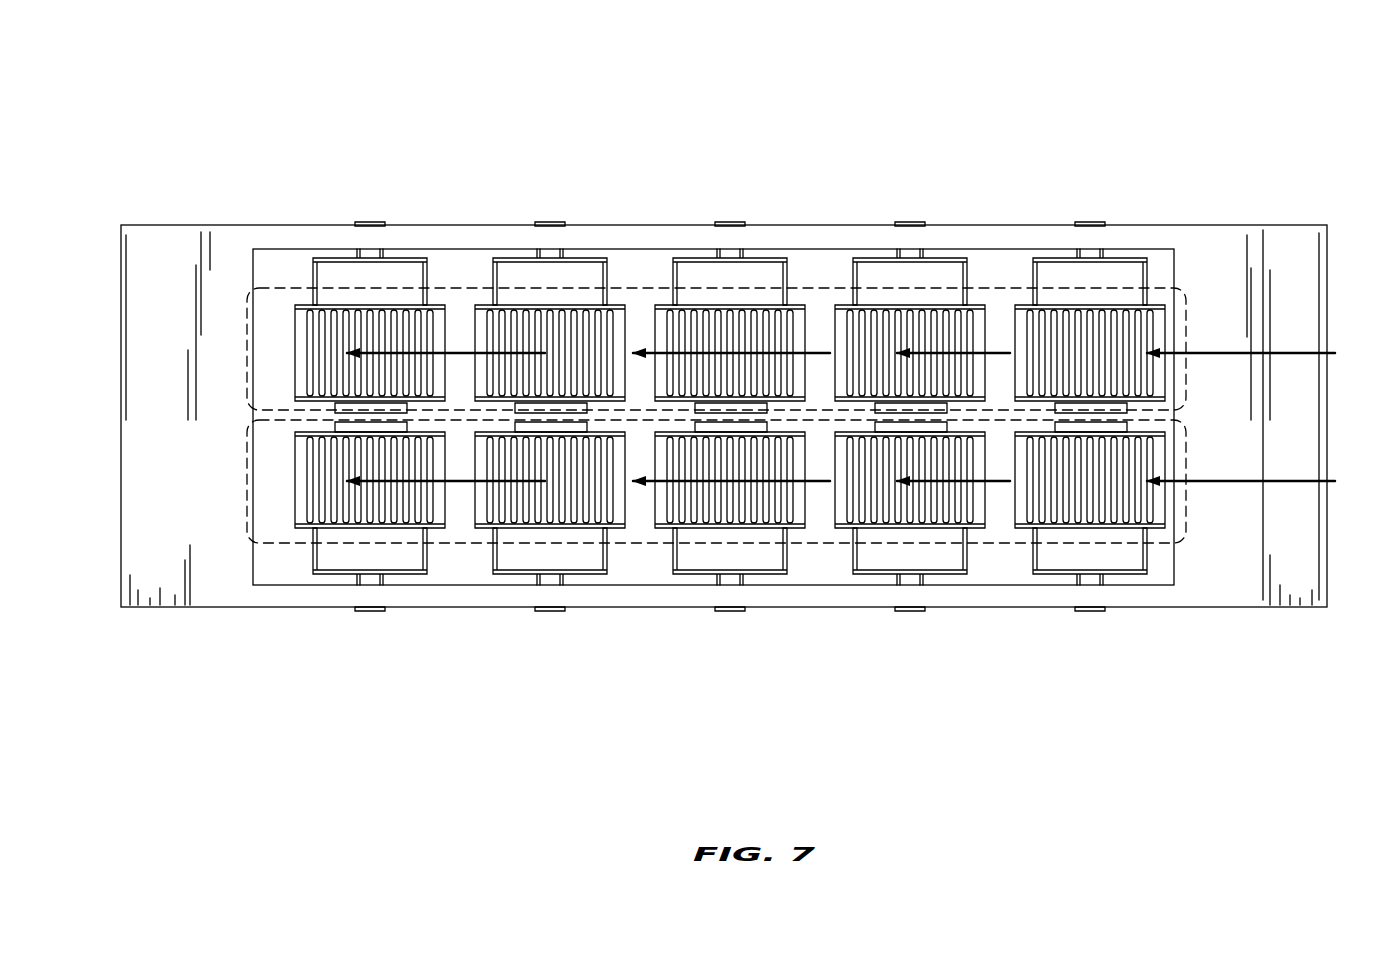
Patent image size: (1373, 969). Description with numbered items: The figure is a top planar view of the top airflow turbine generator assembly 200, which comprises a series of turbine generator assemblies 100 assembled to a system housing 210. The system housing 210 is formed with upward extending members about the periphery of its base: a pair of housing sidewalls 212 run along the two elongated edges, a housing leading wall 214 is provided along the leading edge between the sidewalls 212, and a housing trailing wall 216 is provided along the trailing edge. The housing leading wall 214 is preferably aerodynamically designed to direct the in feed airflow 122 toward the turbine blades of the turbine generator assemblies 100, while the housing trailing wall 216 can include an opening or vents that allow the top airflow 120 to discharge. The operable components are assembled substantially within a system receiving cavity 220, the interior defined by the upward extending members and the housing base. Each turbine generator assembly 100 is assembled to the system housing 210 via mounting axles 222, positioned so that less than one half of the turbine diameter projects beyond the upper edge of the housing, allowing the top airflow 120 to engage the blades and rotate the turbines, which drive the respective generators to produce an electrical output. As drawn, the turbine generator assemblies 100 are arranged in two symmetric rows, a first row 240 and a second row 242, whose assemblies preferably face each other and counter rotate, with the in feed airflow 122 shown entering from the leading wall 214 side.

The turbine generator assembly 100 is at (292, 283).
The top airflow 120 is at (716, 283).
The in feed airflow 122 is at (1215, 353).
The top airflow turbine generator assembly 200 is at (296, 143).
The system housing 210 is at (1238, 650).
The housing sidewalls 212 is at (518, 237).
The housing leading wall 214 is at (1227, 567).
The housing trailing wall 216 is at (210, 565).
The system receiving cavity 220 is at (283, 555).
The mounting axles 222 is at (370, 610).
The first row 240 is at (882, 290).
The second row 242 is at (655, 540).